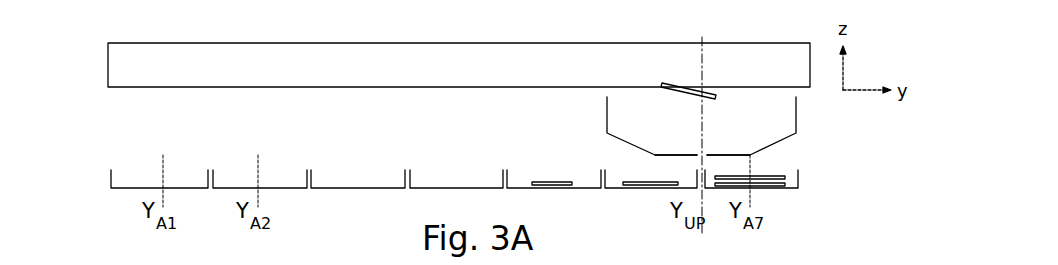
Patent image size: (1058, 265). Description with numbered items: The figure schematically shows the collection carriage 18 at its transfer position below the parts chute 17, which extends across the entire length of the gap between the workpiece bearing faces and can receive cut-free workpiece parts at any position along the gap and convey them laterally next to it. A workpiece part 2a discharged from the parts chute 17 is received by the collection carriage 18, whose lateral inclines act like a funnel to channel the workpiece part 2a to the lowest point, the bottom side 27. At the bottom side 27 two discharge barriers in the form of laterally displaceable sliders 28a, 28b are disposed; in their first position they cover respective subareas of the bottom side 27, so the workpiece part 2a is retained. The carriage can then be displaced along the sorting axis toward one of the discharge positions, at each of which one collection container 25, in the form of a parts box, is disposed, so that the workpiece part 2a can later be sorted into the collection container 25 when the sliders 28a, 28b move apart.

The parts chute 17 is at (124, 67).
The workpiece part 2a is at (710, 93).
The bottom side 27 is at (672, 140).
The collection carriage 18 is at (797, 118).
The slider 28a is at (662, 156).
The slider 28b is at (750, 157).
The collection container 25 is at (289, 189).